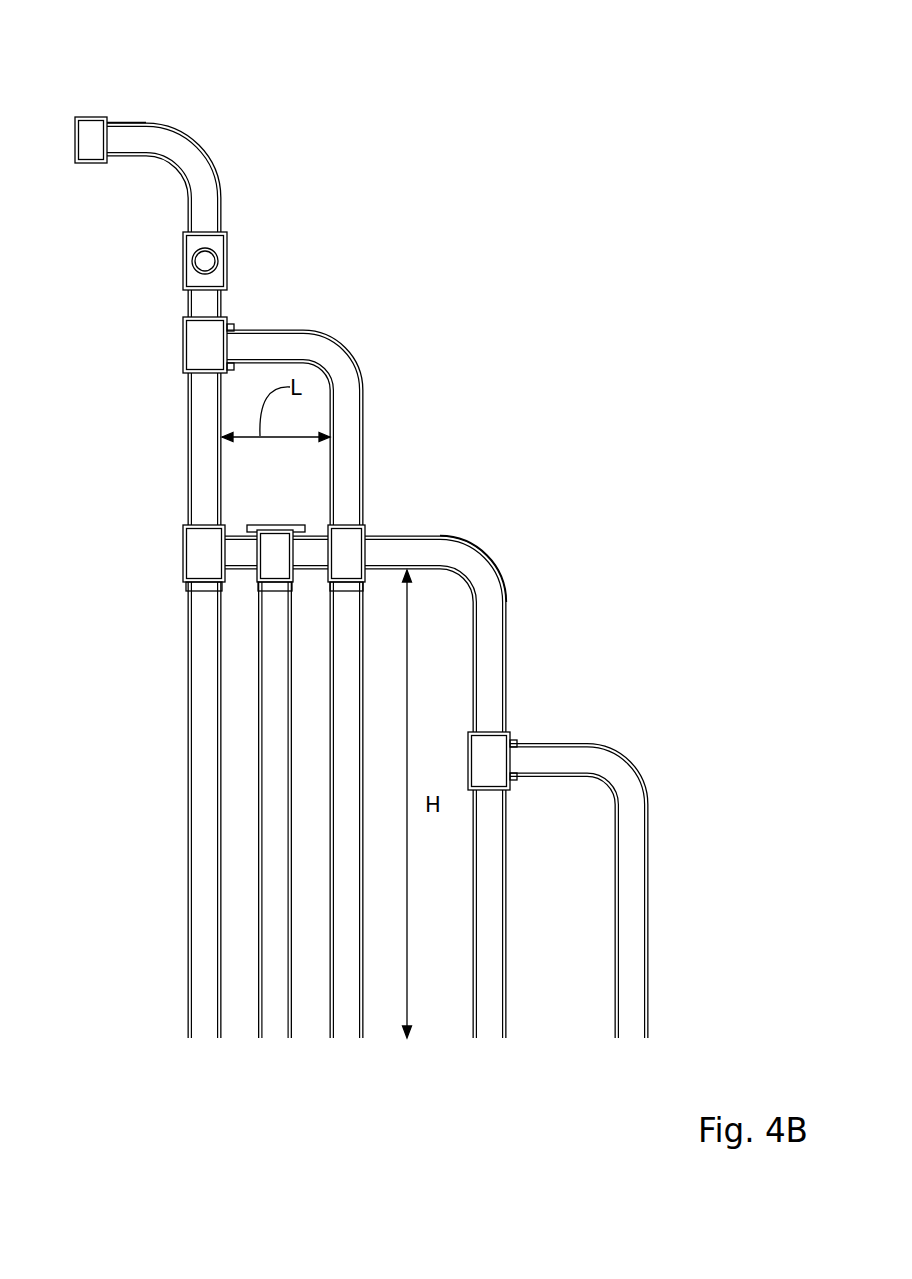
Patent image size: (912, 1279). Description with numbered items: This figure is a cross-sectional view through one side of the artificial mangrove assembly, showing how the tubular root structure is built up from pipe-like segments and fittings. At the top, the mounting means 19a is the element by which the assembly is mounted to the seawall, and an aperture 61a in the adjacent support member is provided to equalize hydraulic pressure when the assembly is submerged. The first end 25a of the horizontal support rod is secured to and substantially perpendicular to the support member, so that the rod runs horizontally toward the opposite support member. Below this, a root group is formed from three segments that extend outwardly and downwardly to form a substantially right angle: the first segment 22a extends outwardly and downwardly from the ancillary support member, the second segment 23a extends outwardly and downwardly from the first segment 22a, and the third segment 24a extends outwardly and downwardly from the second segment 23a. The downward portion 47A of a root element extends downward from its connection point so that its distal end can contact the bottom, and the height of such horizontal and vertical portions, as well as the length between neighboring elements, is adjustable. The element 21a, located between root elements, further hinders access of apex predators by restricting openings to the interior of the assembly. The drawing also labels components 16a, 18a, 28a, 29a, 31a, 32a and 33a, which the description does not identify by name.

The elbow pipe 16a is at (158, 140).
The riser pipe 18a is at (197, 792).
The mounting means 19a is at (85, 144).
The predator-hindering element 21a is at (276, 1025).
The first segment 22a is at (327, 353).
The second segment 23a is at (477, 567).
The third segment 24a is at (618, 770).
The first end of support rod 25a is at (185, 268).
The tee fitting 28a is at (195, 347).
The tee fitting 29a is at (382, 550).
The tee fitting 31a is at (495, 760).
The tee fitting 32a is at (193, 557).
The coupling 33a is at (267, 550).
The downward portion of root element 47A is at (428, 537).
The aperture 61a is at (127, 122).